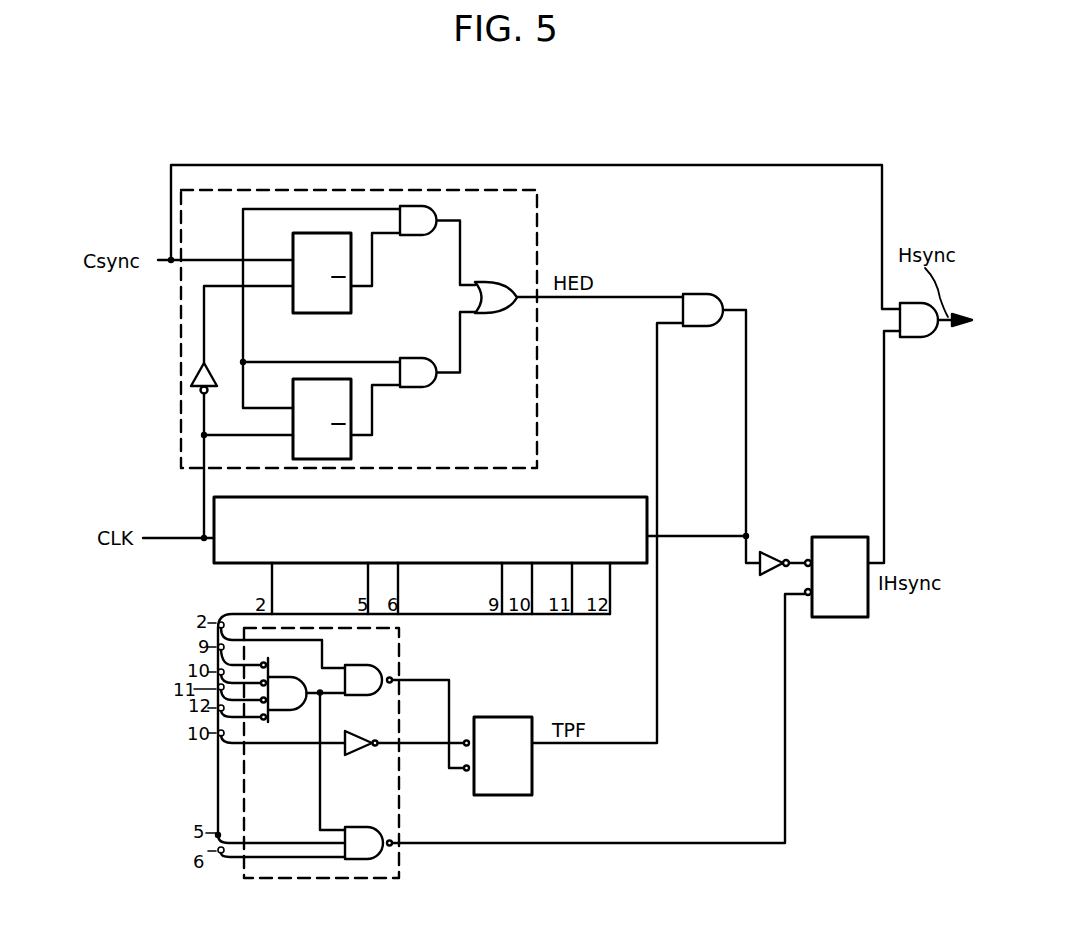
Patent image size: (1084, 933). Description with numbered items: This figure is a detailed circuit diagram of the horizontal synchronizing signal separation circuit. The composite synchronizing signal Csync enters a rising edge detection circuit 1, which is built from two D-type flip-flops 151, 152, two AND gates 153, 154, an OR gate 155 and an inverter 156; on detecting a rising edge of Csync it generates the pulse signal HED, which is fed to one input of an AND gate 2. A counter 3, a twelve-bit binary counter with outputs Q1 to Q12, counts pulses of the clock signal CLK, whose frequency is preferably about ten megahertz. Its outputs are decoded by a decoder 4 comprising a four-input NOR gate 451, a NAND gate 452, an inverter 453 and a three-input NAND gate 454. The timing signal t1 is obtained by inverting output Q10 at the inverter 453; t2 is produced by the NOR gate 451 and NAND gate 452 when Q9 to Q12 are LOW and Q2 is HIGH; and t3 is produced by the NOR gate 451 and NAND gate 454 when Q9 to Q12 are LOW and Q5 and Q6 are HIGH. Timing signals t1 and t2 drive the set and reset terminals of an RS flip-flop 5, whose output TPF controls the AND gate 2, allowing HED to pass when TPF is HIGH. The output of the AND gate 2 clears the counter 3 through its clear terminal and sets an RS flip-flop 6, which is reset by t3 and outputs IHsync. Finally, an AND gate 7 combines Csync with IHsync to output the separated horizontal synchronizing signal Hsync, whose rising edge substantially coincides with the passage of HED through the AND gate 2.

The rising edge detection circuit 1 is at (538, 208).
The AND gate 2 is at (700, 305).
The counter 3 is at (563, 497).
The decoder 4 is at (244, 793).
The RS flip-flop 5 is at (510, 717).
The RS flip-flop 6 is at (837, 617).
The AND gate 7 is at (920, 336).
The D-type flip-flop 151 is at (320, 233).
The D-type flip-flop 152 is at (351, 452).
The AND gate 153 is at (440, 208).
The AND gate 154 is at (426, 383).
The OR gate 155 is at (497, 313).
The inverter 156 is at (192, 373).
The four-input NOR gate 451 is at (283, 711).
The NAND gate 452 is at (382, 665).
The inverter 453 is at (356, 756).
The three-input NAND gate 454 is at (380, 858).